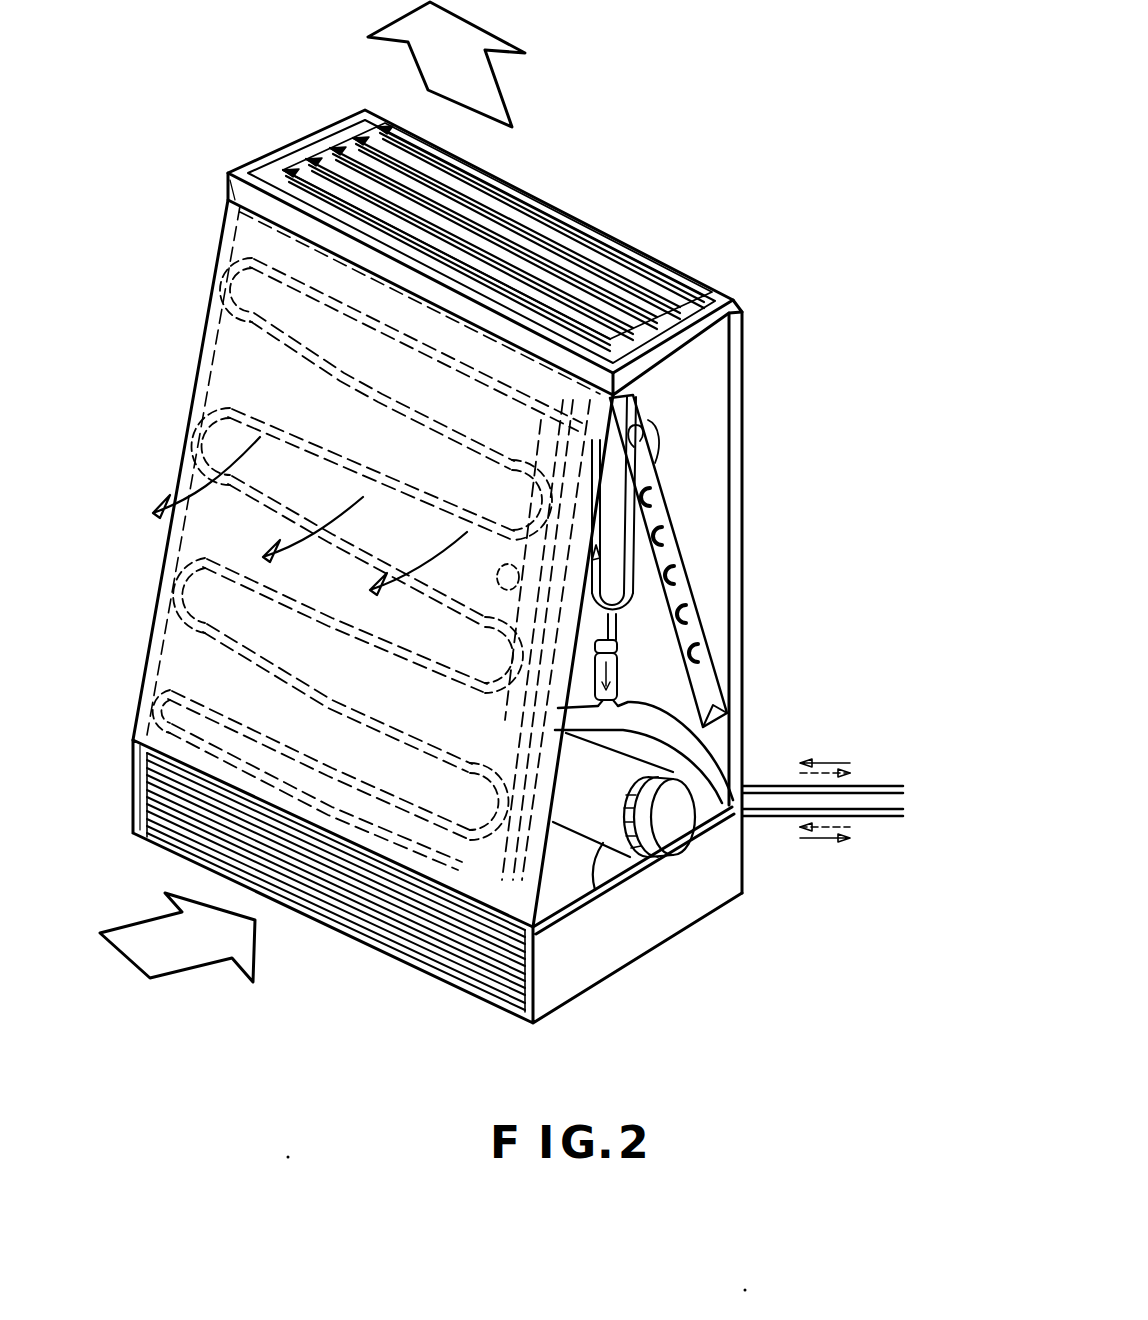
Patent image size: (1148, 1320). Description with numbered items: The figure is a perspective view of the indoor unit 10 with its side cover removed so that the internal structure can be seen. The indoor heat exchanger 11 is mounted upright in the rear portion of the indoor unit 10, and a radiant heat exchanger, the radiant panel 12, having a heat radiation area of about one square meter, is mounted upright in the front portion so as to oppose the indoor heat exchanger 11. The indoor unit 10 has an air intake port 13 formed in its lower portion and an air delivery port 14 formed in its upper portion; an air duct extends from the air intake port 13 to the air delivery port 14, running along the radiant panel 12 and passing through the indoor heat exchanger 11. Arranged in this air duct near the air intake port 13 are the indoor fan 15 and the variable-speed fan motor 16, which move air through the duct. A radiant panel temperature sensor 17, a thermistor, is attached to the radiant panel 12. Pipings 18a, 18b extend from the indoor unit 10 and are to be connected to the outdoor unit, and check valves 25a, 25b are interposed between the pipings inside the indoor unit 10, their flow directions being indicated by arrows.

The indoor unit 10 is at (767, 892).
The indoor heat exchanger 11 is at (678, 530).
The radiant panel 12 is at (225, 207).
The air intake port 13 is at (475, 975).
The air delivery port 14 is at (672, 292).
The indoor fan 15 is at (595, 890).
The variable-speed fan motor 16 is at (670, 827).
The radiant panel temperature sensor 17 is at (497, 587).
The piping 18a is at (882, 785).
The piping 18b is at (882, 817).
The check valve 25a is at (555, 498).
The check valve 25b is at (560, 709).